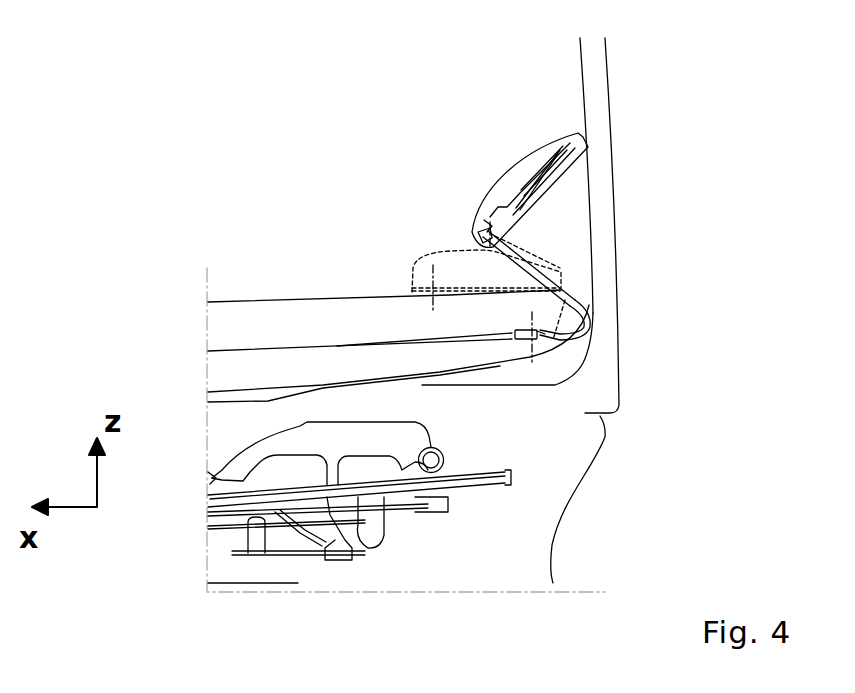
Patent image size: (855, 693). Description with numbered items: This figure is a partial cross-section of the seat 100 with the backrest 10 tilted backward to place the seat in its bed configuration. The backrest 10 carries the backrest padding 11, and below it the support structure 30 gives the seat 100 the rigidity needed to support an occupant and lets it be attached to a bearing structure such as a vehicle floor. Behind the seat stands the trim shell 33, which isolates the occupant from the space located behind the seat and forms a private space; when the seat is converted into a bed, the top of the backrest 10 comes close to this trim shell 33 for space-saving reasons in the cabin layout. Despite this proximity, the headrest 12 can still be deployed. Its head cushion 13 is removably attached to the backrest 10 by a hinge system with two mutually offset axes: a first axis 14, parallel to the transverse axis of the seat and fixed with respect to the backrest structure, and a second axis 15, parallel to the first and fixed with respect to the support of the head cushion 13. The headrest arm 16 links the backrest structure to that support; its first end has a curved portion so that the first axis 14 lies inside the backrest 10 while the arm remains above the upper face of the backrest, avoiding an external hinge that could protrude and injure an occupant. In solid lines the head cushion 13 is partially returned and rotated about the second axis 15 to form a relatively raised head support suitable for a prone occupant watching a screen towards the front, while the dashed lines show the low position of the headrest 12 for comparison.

The seat 100 is at (162, 207).
The backrest 10 is at (187, 331).
The backrest padding 11 is at (275, 313).
The headrest 12 is at (583, 182).
The head cushion 13 is at (510, 176).
The first axis 14 is at (540, 335).
The second axis 15 is at (487, 233).
The headrest arm 16 is at (594, 290).
The support structure 30 is at (386, 558).
The trim shell 33 is at (598, 103).